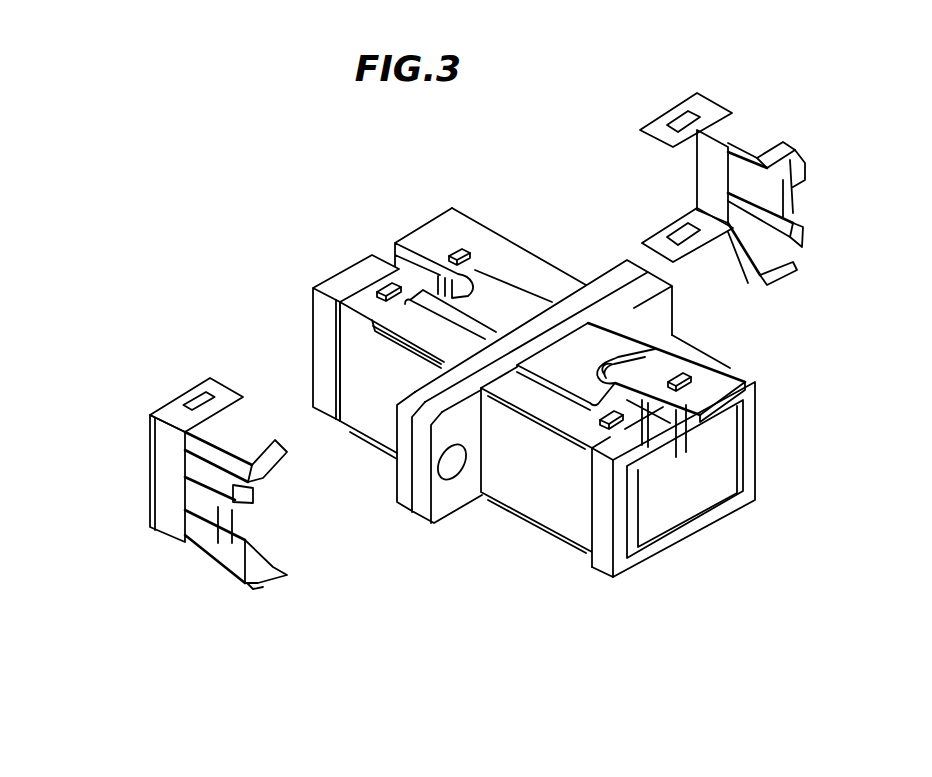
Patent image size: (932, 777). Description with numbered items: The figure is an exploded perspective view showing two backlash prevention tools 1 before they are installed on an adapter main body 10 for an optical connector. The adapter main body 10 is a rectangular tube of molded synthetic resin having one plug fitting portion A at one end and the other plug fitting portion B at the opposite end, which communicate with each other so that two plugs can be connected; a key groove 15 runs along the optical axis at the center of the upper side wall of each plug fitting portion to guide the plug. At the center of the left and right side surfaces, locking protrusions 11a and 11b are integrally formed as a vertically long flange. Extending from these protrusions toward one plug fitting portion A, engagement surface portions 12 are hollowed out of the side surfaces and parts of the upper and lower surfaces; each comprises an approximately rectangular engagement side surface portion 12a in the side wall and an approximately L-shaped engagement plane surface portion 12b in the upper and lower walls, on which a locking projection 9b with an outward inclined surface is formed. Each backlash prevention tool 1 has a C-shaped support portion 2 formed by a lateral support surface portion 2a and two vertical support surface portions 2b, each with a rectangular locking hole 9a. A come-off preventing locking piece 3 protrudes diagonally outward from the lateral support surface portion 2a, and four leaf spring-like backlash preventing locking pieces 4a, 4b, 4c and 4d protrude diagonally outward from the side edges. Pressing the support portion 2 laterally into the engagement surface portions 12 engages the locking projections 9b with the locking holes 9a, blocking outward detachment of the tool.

The backlash prevention tool 1 is at (465, 335).
The support portion 2 is at (433, 304).
The lateral support surface portion 2a is at (155, 492).
The vertical support surface portion 2b is at (403, 293).
The come-off preventing locking piece 3 is at (212, 520).
The backlash preventing locking piece 4a is at (275, 455).
The backlash preventing locking piece 4b is at (255, 498).
The backlash preventing locking piece 4c is at (266, 560).
The backlash preventing locking piece 4d is at (247, 590).
The locking hole 9a is at (200, 400).
The locking projection 9b is at (453, 252).
The adapter main body 10 is at (541, 417).
The locking protrusion 11a is at (467, 503).
The locking protrusion 11b is at (673, 308).
The engagement surface portion 12 is at (490, 423).
The engagement side surface portion 12a is at (357, 357).
The engagement plane surface portion 12b is at (378, 310).
The key groove 15 is at (457, 248).
The one plug fitting portion A is at (306, 334).
The other plug fitting portion B is at (752, 490).